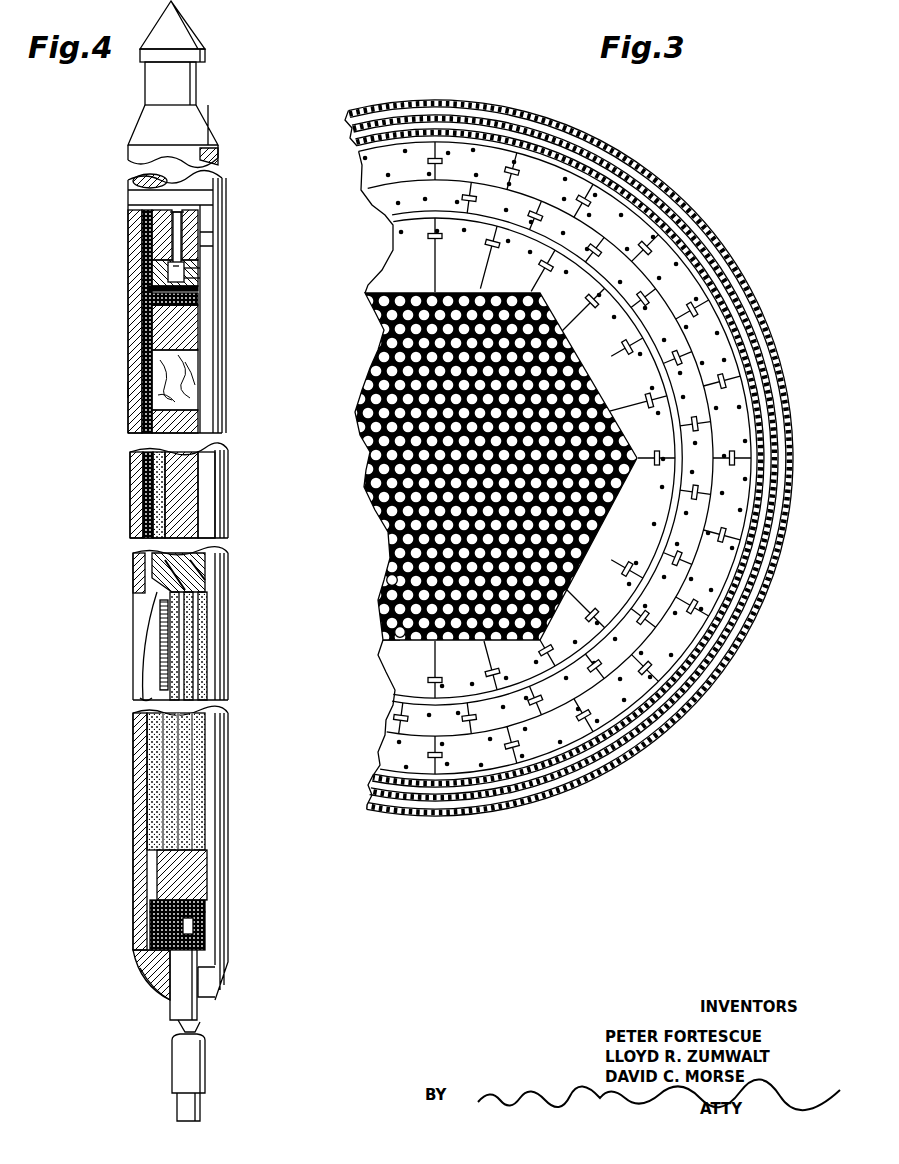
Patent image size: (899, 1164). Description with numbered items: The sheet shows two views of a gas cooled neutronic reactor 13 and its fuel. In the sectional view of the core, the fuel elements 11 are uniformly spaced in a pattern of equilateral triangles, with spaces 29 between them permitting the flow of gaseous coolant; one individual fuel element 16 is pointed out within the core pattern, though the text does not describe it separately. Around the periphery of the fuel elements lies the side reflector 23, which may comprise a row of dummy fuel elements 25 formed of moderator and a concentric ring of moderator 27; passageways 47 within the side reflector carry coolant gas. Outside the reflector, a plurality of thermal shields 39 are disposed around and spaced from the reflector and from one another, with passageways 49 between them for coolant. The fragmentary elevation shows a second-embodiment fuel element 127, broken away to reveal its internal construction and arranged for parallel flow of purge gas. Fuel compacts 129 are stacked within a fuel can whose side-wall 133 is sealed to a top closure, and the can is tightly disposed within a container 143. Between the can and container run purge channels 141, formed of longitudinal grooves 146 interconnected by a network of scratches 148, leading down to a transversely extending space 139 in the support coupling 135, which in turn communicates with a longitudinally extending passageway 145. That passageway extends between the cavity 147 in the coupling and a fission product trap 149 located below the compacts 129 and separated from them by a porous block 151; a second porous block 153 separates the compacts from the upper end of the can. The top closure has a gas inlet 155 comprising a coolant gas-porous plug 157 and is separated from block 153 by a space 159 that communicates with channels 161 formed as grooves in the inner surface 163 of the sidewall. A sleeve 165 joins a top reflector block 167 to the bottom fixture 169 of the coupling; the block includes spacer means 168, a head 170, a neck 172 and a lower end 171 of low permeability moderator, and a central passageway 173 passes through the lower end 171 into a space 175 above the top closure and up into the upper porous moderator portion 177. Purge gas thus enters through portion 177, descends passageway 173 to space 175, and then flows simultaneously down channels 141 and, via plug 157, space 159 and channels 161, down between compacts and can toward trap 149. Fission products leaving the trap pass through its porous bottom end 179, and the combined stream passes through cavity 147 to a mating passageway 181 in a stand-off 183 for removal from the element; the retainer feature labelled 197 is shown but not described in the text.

In FIG. 3, the fuel elements 11 is at (370, 390).
In FIG. 3, the gas cooled neutronic reactor 13 is at (520, 790).
In FIG. 3, the fuel element 16 is at (382, 581).
In FIG. 3, the side reflector 23 is at (400, 688).
In FIG. 3, the dummy fuel elements 25 is at (386, 640).
In FIG. 3, the concentric ring of moderator 27 is at (385, 710).
In FIG. 3, the spaces 29 is at (396, 630).
In FIG. 3, the thermal shields 39 is at (430, 792).
In FIG. 3, the passageways 47 is at (400, 696).
In FIG. 3, the passageways 49 is at (775, 455).
In FIG. 4, the fuel element 127 is at (180, 93).
In FIG. 4, the fuel compacts 129 is at (190, 378).
In FIG. 4, the side-wall 133 is at (143, 368).
In FIG. 4, the support coupling 135 is at (150, 920).
In FIG. 4, the transversely extending space 139 is at (152, 904).
In FIG. 4, the purge channels 141 is at (147, 816).
In FIG. 4, the container 143 is at (225, 502).
In FIG. 4, the longitudinally extending passageway 145 is at (195, 922).
In FIG. 4, the longitudinal grooves 146 is at (160, 676).
In FIG. 4, the cavity 147 is at (135, 935).
In FIG. 4, the scratches 148 is at (145, 700).
In FIG. 4, the fission product trap 149 is at (195, 628).
In FIG. 4, the porous block 151 is at (200, 570).
In FIG. 4, the porous block 153 is at (182, 327).
In FIG. 4, the gas inlet 155 is at (200, 268).
In FIG. 4, the coolant gas-porous plug 157 is at (198, 291).
In FIG. 4, the space 159 is at (198, 305).
In FIG. 4, the channels 161 is at (130, 468).
In FIG. 4, the inner surface 163 is at (150, 498).
In FIG. 4, the sleeve 165 is at (128, 322).
In FIG. 4, the top reflector block 167 is at (152, 244).
In FIG. 4, the spacer means 168 is at (226, 233).
In FIG. 4, the bottom fixture 169 is at (150, 992).
In FIG. 4, the head 170 is at (203, 33).
In FIG. 4, the lower end 171 is at (168, 270).
In FIG. 4, the neck 172 is at (200, 97).
In FIG. 4, the central passageway 173 is at (181, 216).
In FIG. 4, the space 175 is at (200, 278).
In FIG. 4, the upper porous moderator portion 177 is at (145, 220).
In FIG. 4, the porous bottom end 179 is at (160, 874).
In FIG. 4, the mating passageway 181 is at (195, 1028).
In FIG. 4, the stand-off 183 is at (205, 1057).
In FIG. 4, the retainer plate 197 is at (148, 290).